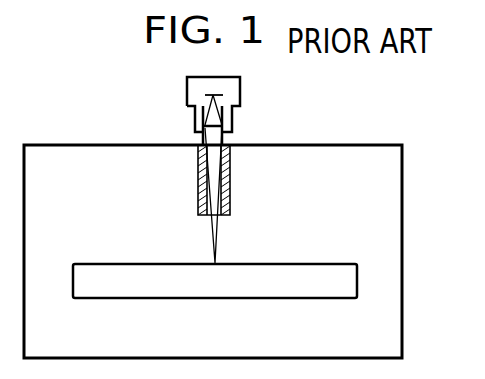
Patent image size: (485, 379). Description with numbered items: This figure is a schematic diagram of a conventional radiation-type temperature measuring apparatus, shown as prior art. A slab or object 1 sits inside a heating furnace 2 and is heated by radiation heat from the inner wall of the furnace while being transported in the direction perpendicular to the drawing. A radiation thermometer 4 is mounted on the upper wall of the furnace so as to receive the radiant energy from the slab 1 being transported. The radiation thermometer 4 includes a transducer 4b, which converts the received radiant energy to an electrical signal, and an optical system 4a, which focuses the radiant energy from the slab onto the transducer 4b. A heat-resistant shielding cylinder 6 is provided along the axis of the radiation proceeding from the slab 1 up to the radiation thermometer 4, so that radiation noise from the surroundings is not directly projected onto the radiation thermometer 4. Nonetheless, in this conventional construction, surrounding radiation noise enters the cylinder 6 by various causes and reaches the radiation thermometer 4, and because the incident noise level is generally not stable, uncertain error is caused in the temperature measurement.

The slab 1 is at (335, 299).
The heating furnace 2 is at (375, 145).
The radiation thermometer 4 is at (145, 118).
The optical system 4a is at (223, 126).
The transducer 4b is at (218, 94).
The heat-resistant shielding cylinder 6 is at (231, 180).